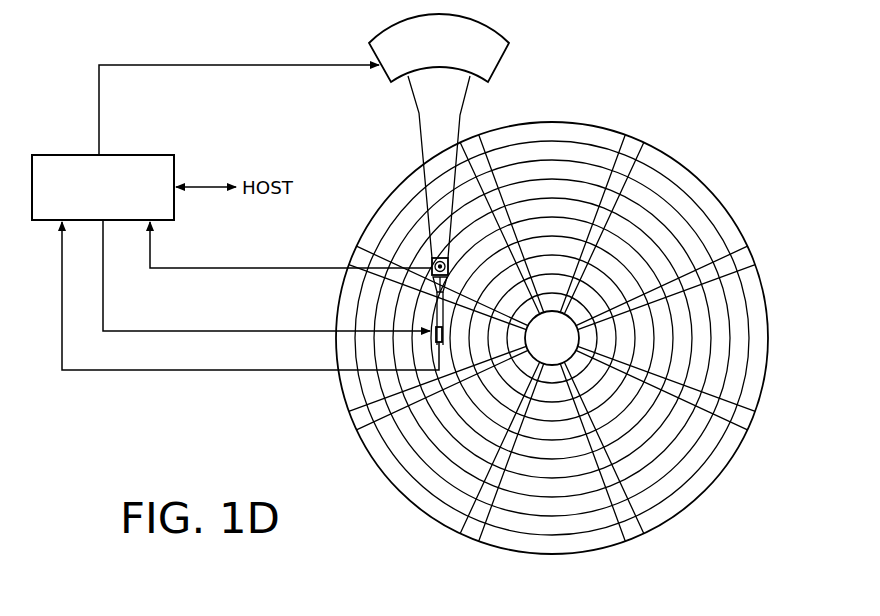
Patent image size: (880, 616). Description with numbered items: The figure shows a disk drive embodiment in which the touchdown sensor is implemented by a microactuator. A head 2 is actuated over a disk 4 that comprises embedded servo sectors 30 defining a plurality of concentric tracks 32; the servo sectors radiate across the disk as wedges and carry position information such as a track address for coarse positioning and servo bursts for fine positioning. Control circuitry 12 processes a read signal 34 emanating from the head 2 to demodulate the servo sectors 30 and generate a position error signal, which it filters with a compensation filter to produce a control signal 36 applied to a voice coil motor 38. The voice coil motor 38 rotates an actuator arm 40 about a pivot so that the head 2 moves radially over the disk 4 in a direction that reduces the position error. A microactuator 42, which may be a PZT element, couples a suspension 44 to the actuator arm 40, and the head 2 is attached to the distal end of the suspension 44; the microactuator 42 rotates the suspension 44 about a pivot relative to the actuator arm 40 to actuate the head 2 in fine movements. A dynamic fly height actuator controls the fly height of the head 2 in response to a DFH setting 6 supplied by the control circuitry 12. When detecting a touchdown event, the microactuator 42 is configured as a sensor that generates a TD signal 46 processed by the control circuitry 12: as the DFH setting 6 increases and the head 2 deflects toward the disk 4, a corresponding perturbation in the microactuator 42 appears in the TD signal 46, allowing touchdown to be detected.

The head 2 is at (431, 342).
The disk 4 is at (559, 332).
The DFH setting 6 is at (270, 330).
The control circuitry 12 is at (139, 154).
The servo sectors 30 is at (477, 138).
The tracks 32 is at (551, 150).
The read signal 34 is at (231, 372).
The control signal 36 is at (98, 93).
The voice coil motor 38 is at (387, 79).
The actuator arm 40 is at (420, 149).
The microactuator 42 is at (452, 265).
The suspension 44 is at (430, 308).
The TD signal 46 is at (244, 270).